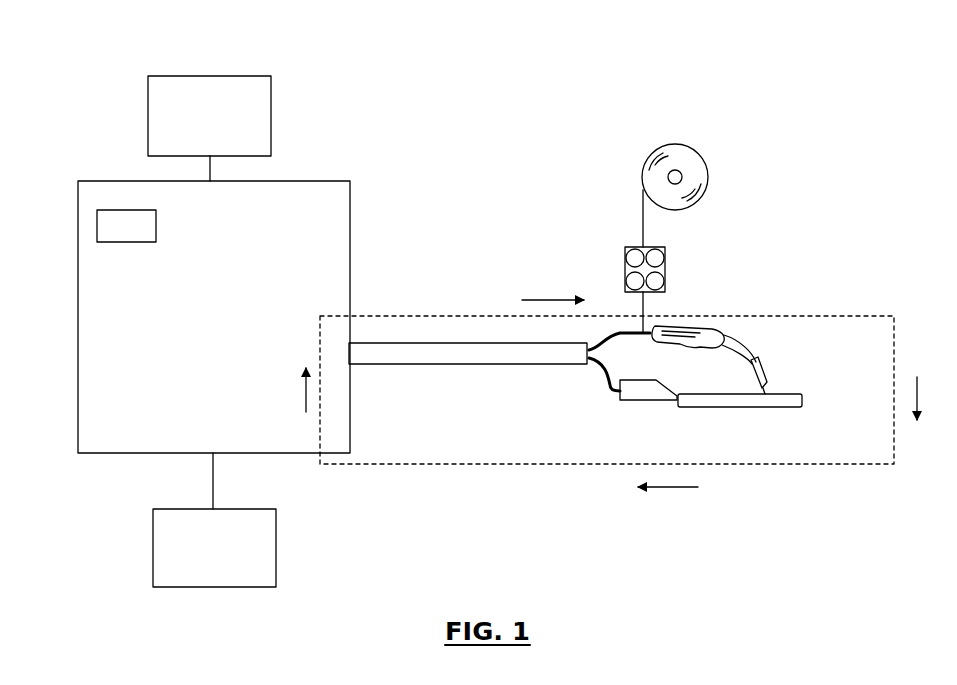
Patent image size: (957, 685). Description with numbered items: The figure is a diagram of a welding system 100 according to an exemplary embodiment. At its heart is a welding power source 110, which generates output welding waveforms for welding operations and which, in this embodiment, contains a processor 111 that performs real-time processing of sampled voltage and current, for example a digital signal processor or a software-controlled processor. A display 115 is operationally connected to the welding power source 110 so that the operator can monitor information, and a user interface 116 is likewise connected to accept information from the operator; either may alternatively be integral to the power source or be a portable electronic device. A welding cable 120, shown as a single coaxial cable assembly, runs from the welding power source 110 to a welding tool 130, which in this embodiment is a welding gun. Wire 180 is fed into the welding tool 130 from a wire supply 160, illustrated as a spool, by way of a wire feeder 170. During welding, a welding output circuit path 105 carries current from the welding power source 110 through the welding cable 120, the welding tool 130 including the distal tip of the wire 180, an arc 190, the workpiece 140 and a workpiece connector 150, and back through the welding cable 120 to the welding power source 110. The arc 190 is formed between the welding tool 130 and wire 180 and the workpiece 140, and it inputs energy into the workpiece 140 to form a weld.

The welding system 100 is at (630, 68).
The welding output circuit path 105 is at (467, 316).
The welding power source 110 is at (226, 388).
The processor 111 is at (107, 229).
The display 115 is at (271, 120).
The user interface 116 is at (276, 552).
The welding cable 120 is at (455, 364).
The welding tool 130 is at (727, 333).
The workpiece 140 is at (732, 407).
The workpiece connector 150 is at (640, 400).
The wire supply 160 is at (708, 177).
The wire feeder 170 is at (665, 270).
The wire 180 is at (647, 305).
The arc 190 is at (757, 390).